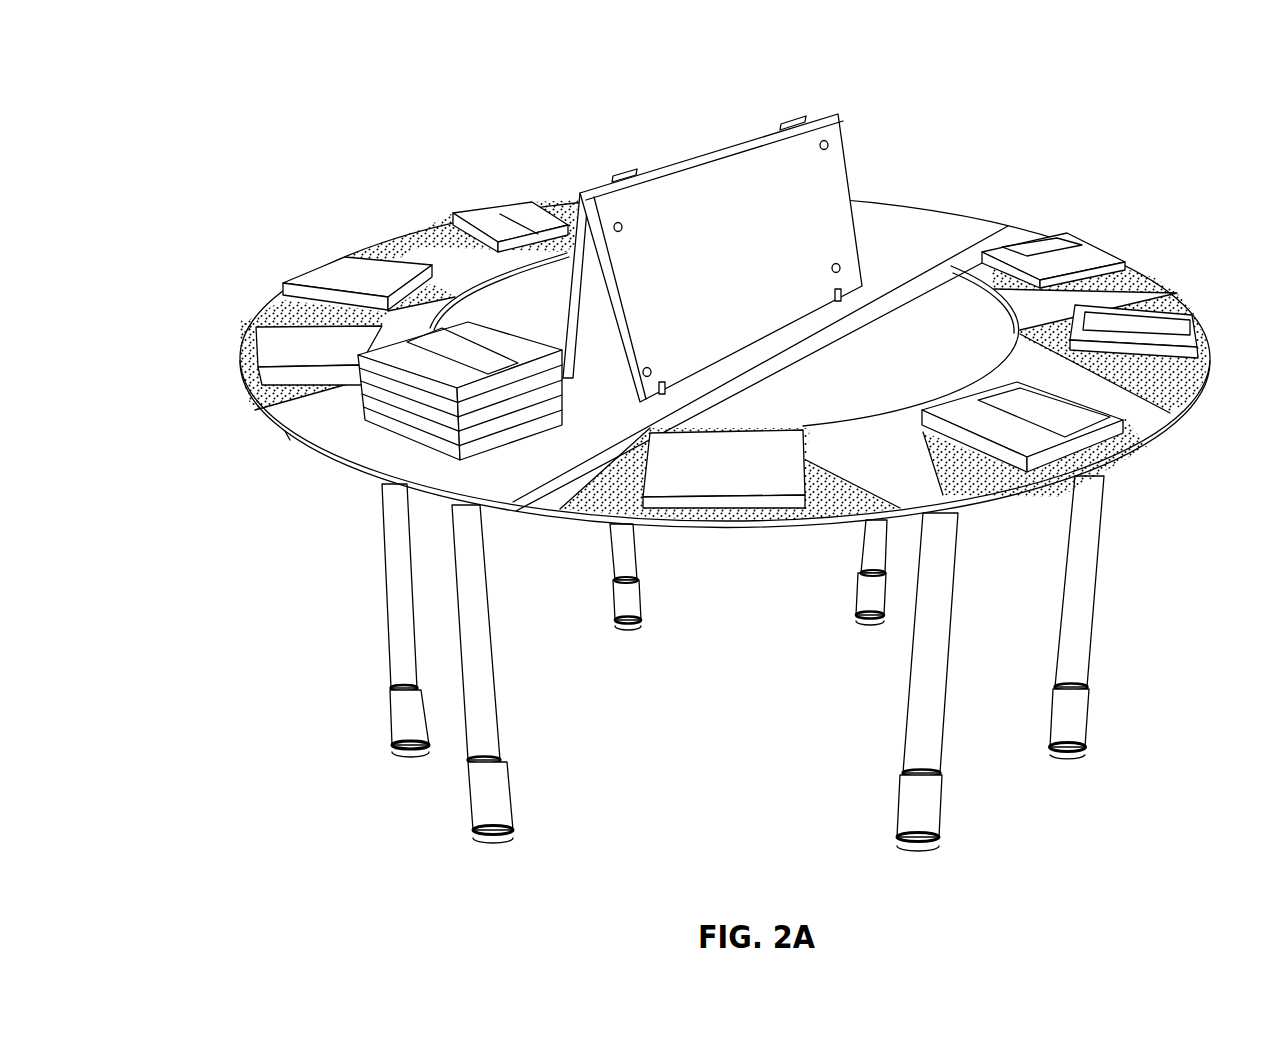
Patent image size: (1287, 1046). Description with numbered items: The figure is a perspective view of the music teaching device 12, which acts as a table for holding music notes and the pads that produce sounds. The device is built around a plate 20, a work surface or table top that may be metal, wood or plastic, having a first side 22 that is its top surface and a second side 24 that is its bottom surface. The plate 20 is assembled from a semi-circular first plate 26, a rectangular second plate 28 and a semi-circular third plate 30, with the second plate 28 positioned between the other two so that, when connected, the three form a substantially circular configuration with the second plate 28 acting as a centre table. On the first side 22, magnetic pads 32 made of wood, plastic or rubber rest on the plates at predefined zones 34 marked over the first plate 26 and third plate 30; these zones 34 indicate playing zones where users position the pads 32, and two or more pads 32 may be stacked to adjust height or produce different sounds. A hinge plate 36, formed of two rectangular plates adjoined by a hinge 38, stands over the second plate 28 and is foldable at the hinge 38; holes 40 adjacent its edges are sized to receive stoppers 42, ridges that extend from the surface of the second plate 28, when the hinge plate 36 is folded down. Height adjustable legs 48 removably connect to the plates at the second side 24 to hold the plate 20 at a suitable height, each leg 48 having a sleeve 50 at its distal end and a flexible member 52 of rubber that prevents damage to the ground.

The music teaching device 12 is at (254, 108).
The plate 20 is at (239, 408).
The first side 22 is at (1133, 278).
The second side 24 is at (760, 535).
The first plate 26 is at (442, 234).
The second plate 28 is at (903, 243).
The third plate 30 is at (1195, 395).
The magnetic pad 32 is at (328, 272).
The zone 34 is at (836, 492).
The hinge plate 36 is at (735, 192).
The hinge 38 is at (616, 178).
The hole 40 is at (836, 125).
The stopper 42 is at (830, 266).
The height adjustable leg 48 is at (395, 560).
The sleeve 50 is at (400, 720).
The flexible member 52 is at (1050, 752).